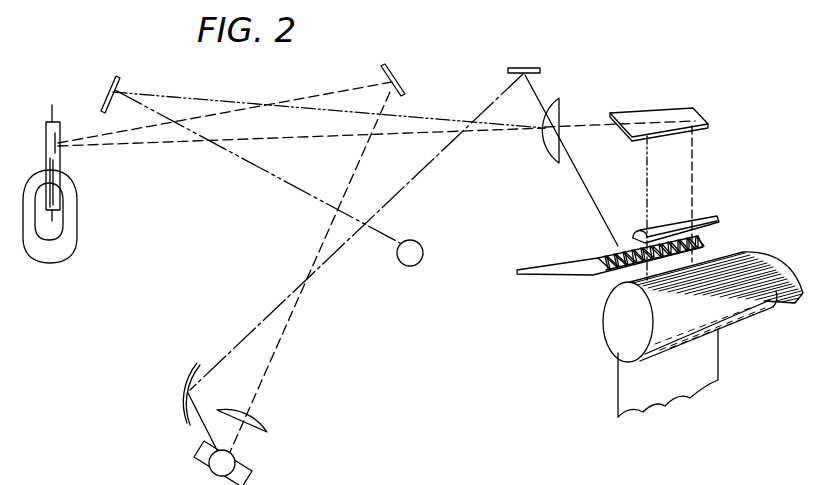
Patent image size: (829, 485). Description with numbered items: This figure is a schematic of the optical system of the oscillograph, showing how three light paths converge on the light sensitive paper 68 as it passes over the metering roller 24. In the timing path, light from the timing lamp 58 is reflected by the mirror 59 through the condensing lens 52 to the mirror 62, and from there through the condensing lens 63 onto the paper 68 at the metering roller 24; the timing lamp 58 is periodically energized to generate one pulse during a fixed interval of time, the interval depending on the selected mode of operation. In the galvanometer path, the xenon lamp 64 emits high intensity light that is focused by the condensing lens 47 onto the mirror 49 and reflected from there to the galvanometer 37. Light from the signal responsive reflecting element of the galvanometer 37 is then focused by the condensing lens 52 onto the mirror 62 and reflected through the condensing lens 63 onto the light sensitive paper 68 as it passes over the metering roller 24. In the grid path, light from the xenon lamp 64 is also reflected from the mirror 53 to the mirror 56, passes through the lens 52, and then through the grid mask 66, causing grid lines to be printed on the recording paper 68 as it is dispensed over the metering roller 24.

The metering roller 24 is at (767, 262).
The galvanometer 37 is at (77, 198).
The condensing lens 47 is at (262, 416).
The mirror 49 is at (396, 81).
The condensing lens 52 is at (544, 154).
The mirror 53 is at (185, 378).
The mirror 56 is at (525, 68).
The timing lamp 58 is at (414, 243).
The mirror 59 is at (110, 88).
The mirror 62 is at (670, 108).
The condensing lens 63 is at (710, 218).
The xenon lamp 64 is at (228, 462).
The grid mask 66 is at (563, 277).
The light sensitive paper 68 is at (618, 383).